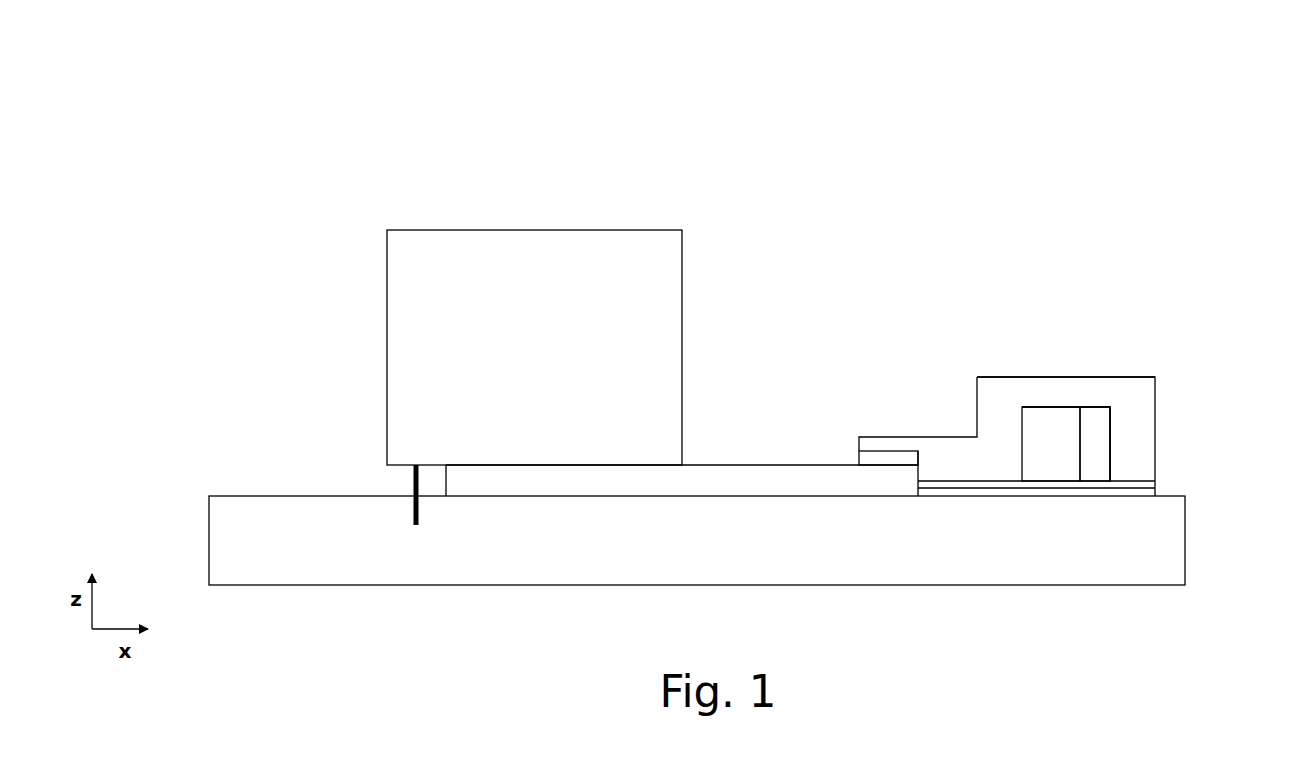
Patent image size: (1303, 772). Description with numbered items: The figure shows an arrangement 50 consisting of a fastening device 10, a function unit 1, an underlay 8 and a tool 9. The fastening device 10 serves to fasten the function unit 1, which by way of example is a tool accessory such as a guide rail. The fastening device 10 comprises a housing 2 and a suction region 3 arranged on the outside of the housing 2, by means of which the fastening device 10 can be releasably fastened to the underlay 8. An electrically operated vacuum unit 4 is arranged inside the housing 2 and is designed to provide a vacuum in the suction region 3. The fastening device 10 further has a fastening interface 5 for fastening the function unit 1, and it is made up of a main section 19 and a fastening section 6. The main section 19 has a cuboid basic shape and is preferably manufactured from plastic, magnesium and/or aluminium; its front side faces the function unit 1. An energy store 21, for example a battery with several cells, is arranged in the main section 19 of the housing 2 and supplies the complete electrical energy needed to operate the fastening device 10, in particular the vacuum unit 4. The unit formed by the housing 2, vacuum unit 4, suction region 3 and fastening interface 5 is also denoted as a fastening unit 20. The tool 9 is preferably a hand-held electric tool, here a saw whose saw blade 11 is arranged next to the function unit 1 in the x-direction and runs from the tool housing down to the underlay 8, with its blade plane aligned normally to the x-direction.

The arrangement 50 is at (243, 124).
The underlay 8 is at (228, 535).
The tool 9 is at (590, 248).
The function unit 1 is at (740, 480).
The saw blade 11 is at (413, 487).
The fastening interface 5 is at (888, 459).
The fastening section 6 is at (880, 427).
The housing 2 is at (1011, 384).
The main section 19 is at (1105, 372).
The suction region 3 is at (1145, 488).
The vacuum unit 4 is at (1052, 420).
The energy store 21 is at (1097, 427).
The fastening device 10 is at (1170, 431).
The fastening unit 20 is at (1066, 444).